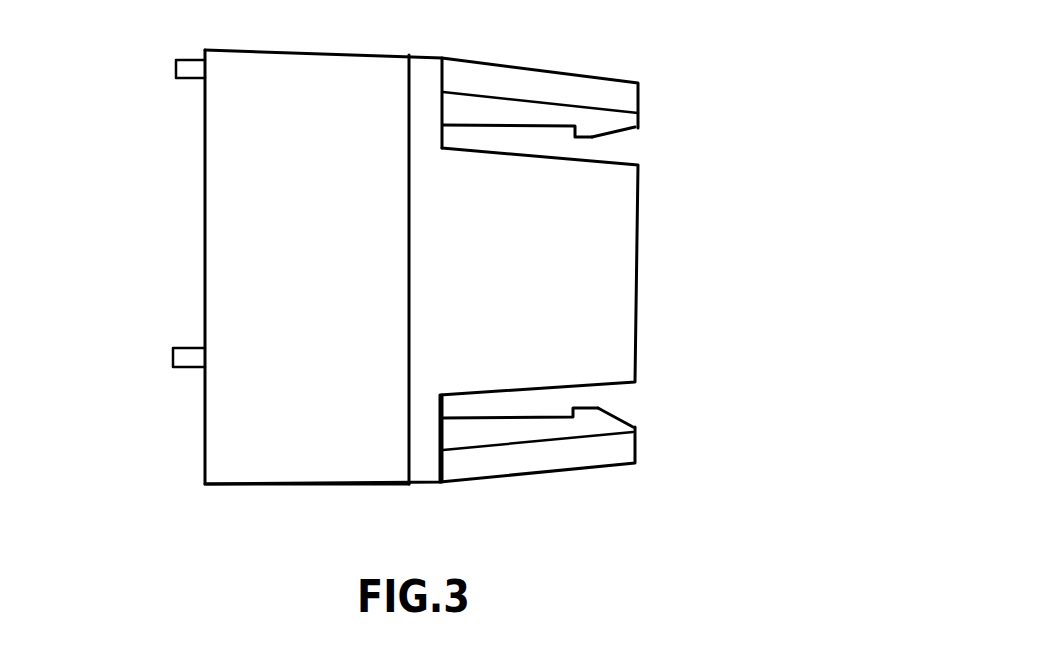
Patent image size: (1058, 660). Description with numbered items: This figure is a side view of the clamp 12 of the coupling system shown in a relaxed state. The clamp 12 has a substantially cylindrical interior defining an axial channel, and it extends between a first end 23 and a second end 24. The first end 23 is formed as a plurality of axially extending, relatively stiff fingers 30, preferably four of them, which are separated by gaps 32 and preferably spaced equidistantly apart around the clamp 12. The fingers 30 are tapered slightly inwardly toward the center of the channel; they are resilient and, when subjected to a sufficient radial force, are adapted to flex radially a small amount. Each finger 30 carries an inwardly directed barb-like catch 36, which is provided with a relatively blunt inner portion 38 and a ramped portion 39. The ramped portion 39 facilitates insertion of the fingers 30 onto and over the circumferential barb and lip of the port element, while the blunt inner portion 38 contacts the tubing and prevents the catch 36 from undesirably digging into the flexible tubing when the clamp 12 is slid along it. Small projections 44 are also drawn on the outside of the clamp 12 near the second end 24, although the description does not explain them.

The clamp 12 is at (328, 50).
The first end 23 is at (640, 97).
The second end 24 is at (200, 457).
The fingers 30 is at (563, 113).
The gaps 32 is at (598, 400).
The catch 36 is at (575, 128).
The blunt inner portion 38 is at (592, 138).
The ramped portion 39 is at (627, 130).
The mounting tab 44 is at (187, 62).